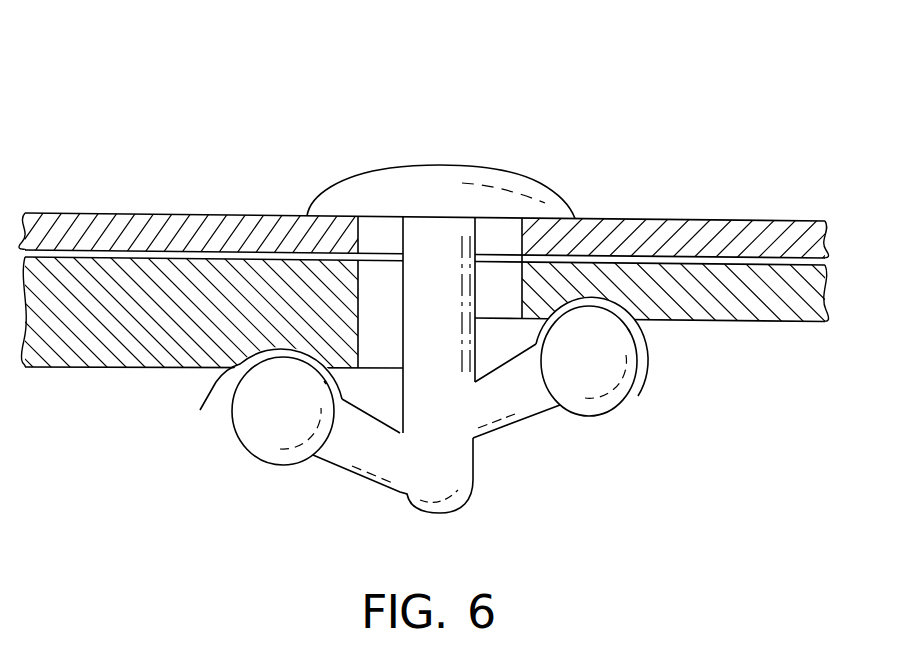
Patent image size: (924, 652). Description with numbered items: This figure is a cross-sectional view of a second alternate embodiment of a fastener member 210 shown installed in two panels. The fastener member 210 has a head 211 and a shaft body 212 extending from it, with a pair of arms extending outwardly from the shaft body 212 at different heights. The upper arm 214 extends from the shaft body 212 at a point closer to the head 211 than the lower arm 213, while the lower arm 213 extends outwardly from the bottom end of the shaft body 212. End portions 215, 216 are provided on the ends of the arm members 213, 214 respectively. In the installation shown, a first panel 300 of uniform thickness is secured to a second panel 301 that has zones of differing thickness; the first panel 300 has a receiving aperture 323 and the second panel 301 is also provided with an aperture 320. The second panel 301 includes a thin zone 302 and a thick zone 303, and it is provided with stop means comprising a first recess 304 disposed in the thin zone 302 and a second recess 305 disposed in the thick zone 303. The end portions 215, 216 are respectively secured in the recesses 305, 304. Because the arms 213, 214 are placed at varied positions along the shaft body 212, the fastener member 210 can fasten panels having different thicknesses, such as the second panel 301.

The fastener member 210 is at (481, 143).
The head 211 is at (400, 367).
The shaft body 212 is at (447, 243).
The lower arm 213 is at (358, 465).
The upper arm 214 is at (510, 407).
The end portion 215 is at (272, 442).
The end portion 216 is at (618, 383).
The first panel 300 is at (718, 217).
The second panel 301 is at (807, 322).
The thin zone 302 is at (753, 322).
The thick zone 303 is at (117, 347).
The first recess 304 is at (640, 318).
The second recess 305 is at (200, 410).
The aperture 320 is at (380, 190).
The receiving aperture 323 is at (393, 232).